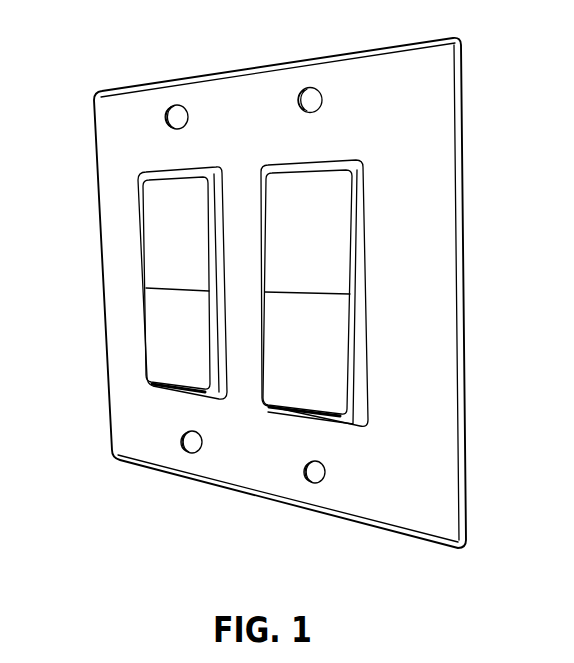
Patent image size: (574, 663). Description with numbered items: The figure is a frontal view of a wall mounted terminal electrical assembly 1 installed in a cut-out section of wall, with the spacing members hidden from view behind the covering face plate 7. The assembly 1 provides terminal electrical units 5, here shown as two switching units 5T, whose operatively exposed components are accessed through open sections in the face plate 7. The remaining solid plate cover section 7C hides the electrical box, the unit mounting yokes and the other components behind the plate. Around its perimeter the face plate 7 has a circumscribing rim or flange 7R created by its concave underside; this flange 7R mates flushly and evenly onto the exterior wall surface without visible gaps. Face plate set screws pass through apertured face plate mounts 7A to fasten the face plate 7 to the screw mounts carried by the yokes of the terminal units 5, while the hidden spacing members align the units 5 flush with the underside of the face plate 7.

The wall mounted terminal electrical assembly 1 is at (68, 205).
The terminal electrical unit 5 is at (158, 328).
The switching unit 5T is at (322, 346).
The face plate 7 is at (433, 282).
The terminal unit face plate mount 7A is at (327, 469).
The solid plate cover section 7C is at (124, 399).
The circumscribing rim or flange 7R is at (418, 35).